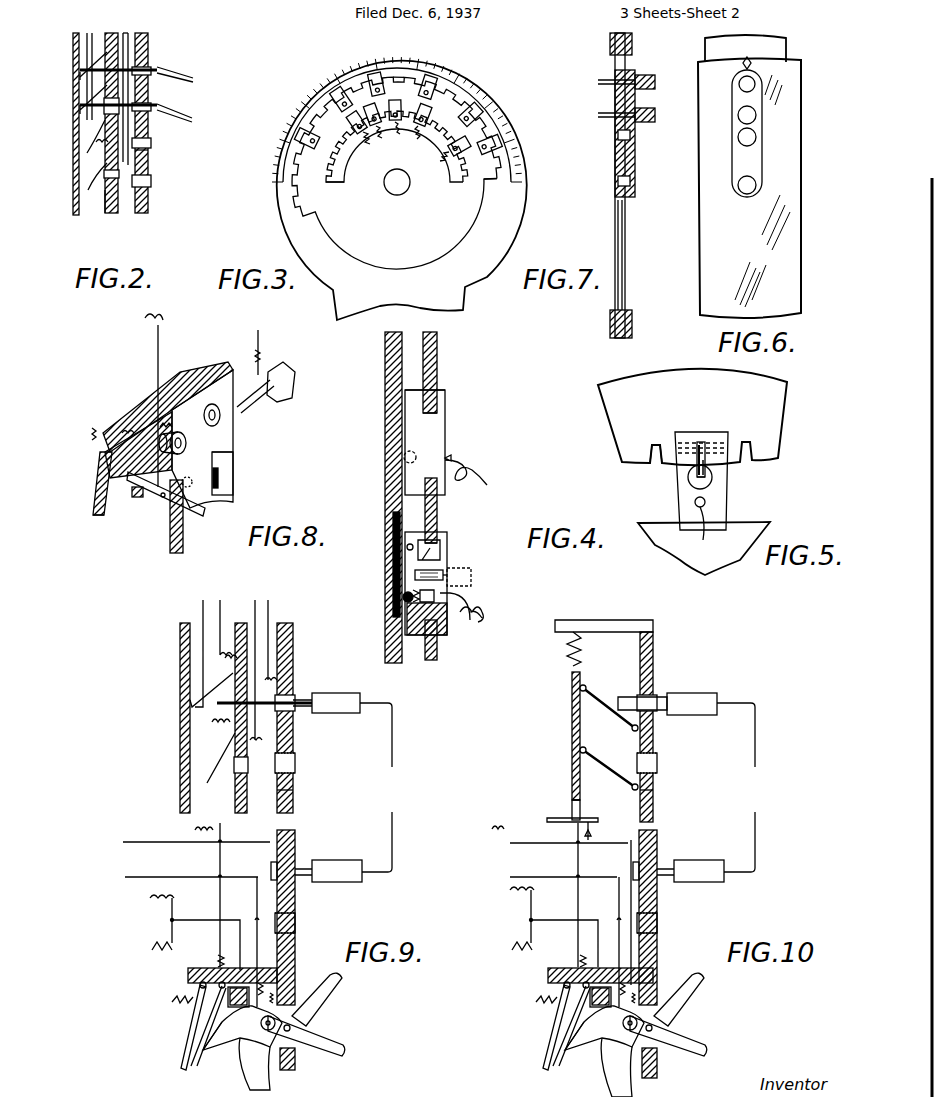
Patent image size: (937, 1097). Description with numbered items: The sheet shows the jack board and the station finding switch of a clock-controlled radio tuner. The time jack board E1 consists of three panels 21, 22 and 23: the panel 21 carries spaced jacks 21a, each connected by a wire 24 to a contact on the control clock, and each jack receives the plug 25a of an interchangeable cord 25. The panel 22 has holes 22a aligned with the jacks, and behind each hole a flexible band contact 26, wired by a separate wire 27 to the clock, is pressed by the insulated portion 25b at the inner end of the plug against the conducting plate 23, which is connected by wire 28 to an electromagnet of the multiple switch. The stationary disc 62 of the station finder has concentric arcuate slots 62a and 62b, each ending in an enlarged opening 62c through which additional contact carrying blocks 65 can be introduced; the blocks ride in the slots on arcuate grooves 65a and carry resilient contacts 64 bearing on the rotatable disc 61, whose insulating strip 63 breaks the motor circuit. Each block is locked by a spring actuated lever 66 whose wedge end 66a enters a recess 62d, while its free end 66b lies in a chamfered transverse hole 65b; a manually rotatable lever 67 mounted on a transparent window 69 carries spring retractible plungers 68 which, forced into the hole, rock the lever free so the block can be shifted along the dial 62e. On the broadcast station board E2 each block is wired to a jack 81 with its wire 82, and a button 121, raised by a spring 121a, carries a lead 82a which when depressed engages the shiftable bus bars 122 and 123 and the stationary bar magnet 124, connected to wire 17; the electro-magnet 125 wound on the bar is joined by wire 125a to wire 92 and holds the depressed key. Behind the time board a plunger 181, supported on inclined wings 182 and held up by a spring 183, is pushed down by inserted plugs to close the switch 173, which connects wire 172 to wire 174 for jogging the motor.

In FIG. 8, the wire 17 is at (92, 430).
In FIG. 9, the wire 17 is at (172, 1000).
In FIG. 10, the wire 17 is at (536, 1002).
In FIG. 2, the panel 21 is at (148, 210).
In FIG. 9, the panel 21 is at (291, 813).
In FIG. 10, the panel 21 is at (654, 745).
In FIG. 2, the jack 21a is at (148, 181).
In FIG. 9, the jack 21a is at (295, 769).
In FIG. 10, the jack 21a is at (647, 763).
In FIG. 2, the panel 22 is at (118, 206).
In FIG. 9, the panel 22 is at (247, 806).
In FIG. 2, the hole 22a is at (108, 198).
In FIG. 2, the conducting plate 23 is at (73, 206).
In FIG. 9, the conducting plate 23 is at (185, 798).
In FIG. 2, the wire 24 is at (148, 38).
In FIG. 9, the wire 24 is at (268, 660).
In FIG. 2, the cord 25 is at (193, 78).
In FIG. 9, the cord 25 is at (390, 822).
In FIG. 10, the cord 25 is at (753, 822).
In FIG. 2, the plug 25a is at (153, 67).
In FIG. 9, the plug 25a is at (302, 698).
In FIG. 10, the plug 25a is at (660, 700).
In FIG. 2, the insulated portion 25b is at (100, 64).
In FIG. 9, the insulated portion 25b is at (253, 710).
In FIG. 2, the flexible band contact 26 is at (80, 77).
In FIG. 9, the flexible band contact 26 is at (207, 783).
In FIG. 2, the wire 27 is at (82, 98).
In FIG. 9, the wire 27 is at (226, 614).
In FIG. 8, the wire 28 is at (122, 433).
In FIG. 9, the wire 28 is at (195, 829).
In FIG. 10, the wire 28 is at (492, 828).
In FIG. 2, the time jack board E1 is at (148, 157).
In FIG. 9, the time jack board E1 is at (293, 798).
In FIG. 10, the time jack board E1 is at (655, 806).
In FIG. 8, the broadcast station board E2 is at (235, 434).
In FIG. 9, the broadcast station board E2 is at (310, 1036).
In FIG. 10, the broadcast station board E2 is at (675, 1032).
In FIG. 4, the rotatable disc 61 is at (385, 370).
In FIG. 3, the stationary disc 62 is at (399, 188).
In FIG. 4, the stationary disc 62 is at (437, 355).
In FIG. 5, the stationary disc 62 is at (692, 417).
In FIG. 3, the arcuate slot 62a is at (496, 188).
In FIG. 4, the arcuate slot 62a is at (432, 420).
In FIG. 3, the arcuate slot 62b is at (459, 187).
In FIG. 4, the arcuate slot 62b is at (423, 635).
In FIG. 5, the arcuate slot 62b is at (728, 523).
In FIG. 3, the enlarged opening 62c is at (333, 203).
In FIG. 3, the recess 62d is at (296, 122).
In FIG. 5, the recess 62d is at (652, 444).
In FIG. 3, the dial 62e is at (422, 64).
In FIG. 4, the insulating strip 63 is at (393, 530).
In FIG. 3, the contact 64 is at (455, 95).
In FIG. 4, the contact 64 is at (404, 457).
In FIG. 3, the contact carrying block 65 is at (478, 112).
In FIG. 4, the contact carrying block 65 is at (428, 438).
In FIG. 5, the contact carrying block 65 is at (716, 491).
In FIG. 4, the arcuate groove 65a is at (440, 400).
In FIG. 4, the transverse hole 65b is at (452, 592).
In FIG. 5, the transverse hole 65b is at (692, 487).
In FIG. 3, the spring actuated lever 66 is at (498, 140).
In FIG. 4, the spring actuated lever 66 is at (443, 573).
In FIG. 5, the spring actuated lever 66 is at (697, 458).
In FIG. 4, the wedge shaped end 66a is at (442, 552).
In FIG. 5, the wedge shaped end 66a is at (700, 442).
In FIG. 4, the free end of lever 66b is at (450, 571).
In FIG. 5, the free end of lever 66b is at (696, 477).
In FIG. 7, the lever 67 is at (636, 160).
In FIG. 6, the lever 67 is at (748, 157).
In FIG. 7, the spring retractible plunger 68 is at (610, 82).
In FIG. 4, the spring retractible plunger 68 is at (453, 578).
In FIG. 7, the transparent rotatable window 69 is at (625, 250).
In FIG. 6, the transparent rotatable window 69 is at (749, 176).
In FIG. 8, the jack 81 is at (189, 429).
In FIG. 9, the jack 81 is at (305, 886).
In FIG. 10, the jack 81 is at (658, 888).
In FIG. 8, the wire 82 is at (140, 397).
In FIG. 4, the wire 82 is at (490, 617).
In FIG. 5, the wire 82 is at (704, 536).
In FIG. 9, the wire 82 is at (148, 877).
In FIG. 10, the wire 82 is at (532, 877).
In FIG. 8, the lead 82a is at (165, 437).
In FIG. 9, the lead 82a is at (257, 905).
In FIG. 10, the lead 82a is at (619, 905).
In FIG. 9, the wire 92 is at (172, 912).
In FIG. 10, the wire 92 is at (531, 910).
In FIG. 8, the button 121 is at (192, 520).
In FIG. 9, the button 121 is at (317, 1005).
In FIG. 10, the button 121 is at (680, 1000).
In FIG. 8, the spring 121a is at (175, 518).
In FIG. 9, the spring 121a is at (296, 1053).
In FIG. 10, the spring 121a is at (658, 1056).
In FIG. 8, the bus bar 122 is at (95, 487).
In FIG. 9, the bus bar 122 is at (197, 1010).
In FIG. 10, the bus bar 122 is at (560, 1010).
In FIG. 8, the bus bar 123 is at (98, 508).
In FIG. 9, the bus bar 123 is at (200, 1030).
In FIG. 10, the bus bar 123 is at (562, 1030).
In FIG. 8, the bar magnet 124 is at (140, 498).
In FIG. 9, the bar magnet 124 is at (203, 1050).
In FIG. 10, the bar magnet 124 is at (565, 1050).
In FIG. 8, the electro-magnet 125 is at (250, 410).
In FIG. 9, the electro-magnet 125 is at (245, 1040).
In FIG. 10, the electro-magnet 125 is at (605, 1042).
In FIG. 8, the wire 125a is at (274, 346).
In FIG. 9, the wire 125a is at (222, 950).
In FIG. 10, the wire 125a is at (585, 950).
In FIG. 10, the wire 172 is at (590, 835).
In FIG. 10, the switch 173 is at (576, 814).
In FIG. 10, the wire 174 is at (548, 820).
In FIG. 10, the plunger 181 is at (572, 745).
In FIG. 10, the wing 182 is at (625, 724).
In FIG. 10, the spring 183 is at (590, 649).